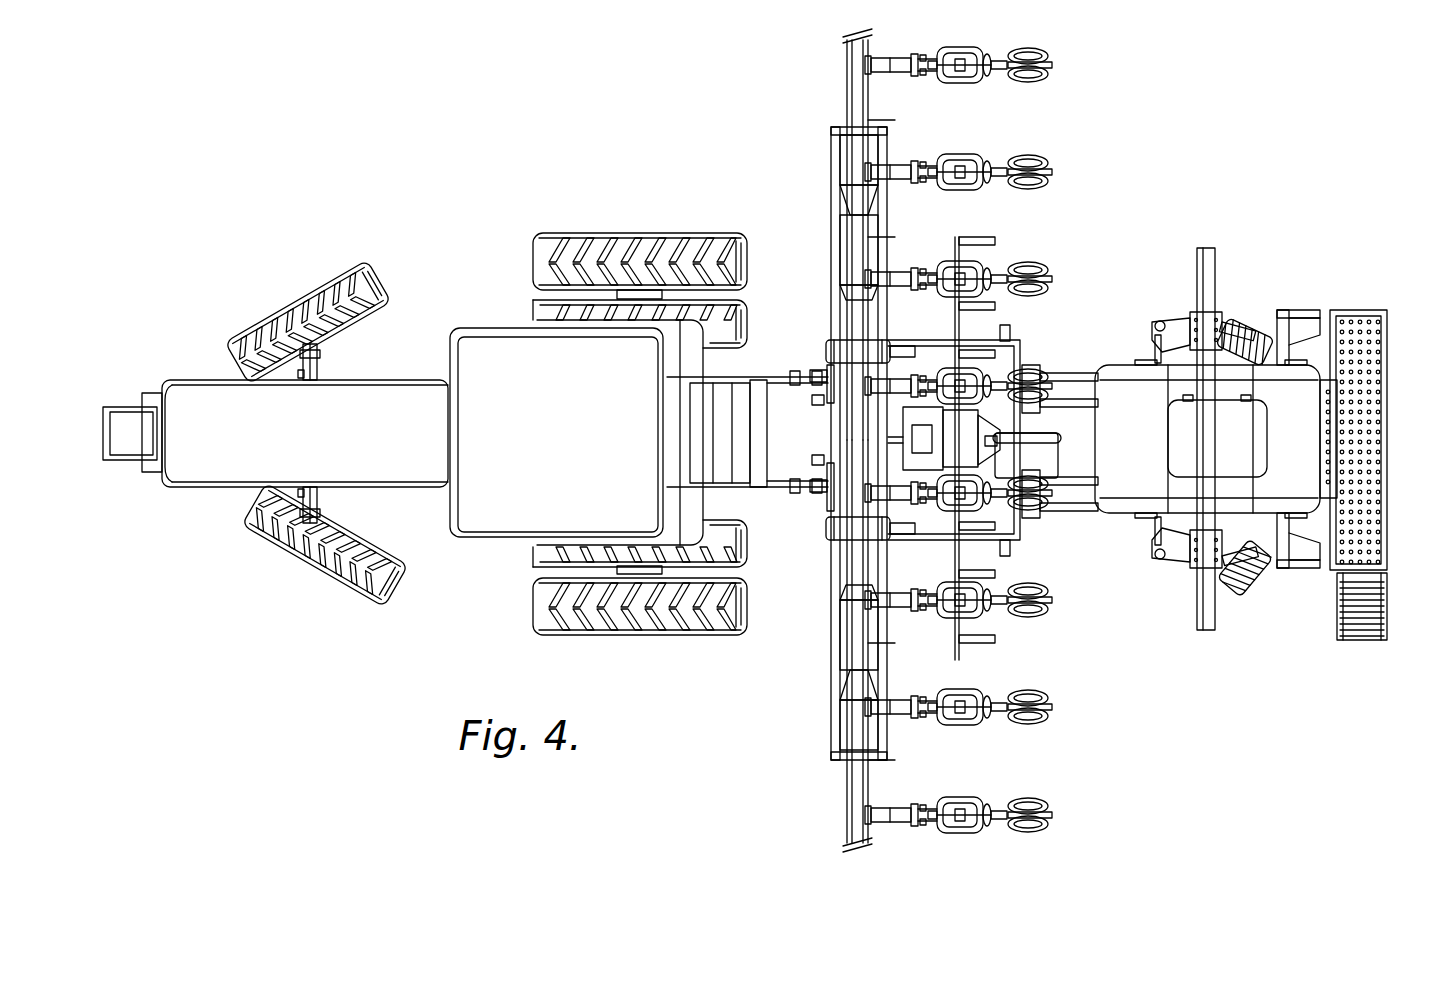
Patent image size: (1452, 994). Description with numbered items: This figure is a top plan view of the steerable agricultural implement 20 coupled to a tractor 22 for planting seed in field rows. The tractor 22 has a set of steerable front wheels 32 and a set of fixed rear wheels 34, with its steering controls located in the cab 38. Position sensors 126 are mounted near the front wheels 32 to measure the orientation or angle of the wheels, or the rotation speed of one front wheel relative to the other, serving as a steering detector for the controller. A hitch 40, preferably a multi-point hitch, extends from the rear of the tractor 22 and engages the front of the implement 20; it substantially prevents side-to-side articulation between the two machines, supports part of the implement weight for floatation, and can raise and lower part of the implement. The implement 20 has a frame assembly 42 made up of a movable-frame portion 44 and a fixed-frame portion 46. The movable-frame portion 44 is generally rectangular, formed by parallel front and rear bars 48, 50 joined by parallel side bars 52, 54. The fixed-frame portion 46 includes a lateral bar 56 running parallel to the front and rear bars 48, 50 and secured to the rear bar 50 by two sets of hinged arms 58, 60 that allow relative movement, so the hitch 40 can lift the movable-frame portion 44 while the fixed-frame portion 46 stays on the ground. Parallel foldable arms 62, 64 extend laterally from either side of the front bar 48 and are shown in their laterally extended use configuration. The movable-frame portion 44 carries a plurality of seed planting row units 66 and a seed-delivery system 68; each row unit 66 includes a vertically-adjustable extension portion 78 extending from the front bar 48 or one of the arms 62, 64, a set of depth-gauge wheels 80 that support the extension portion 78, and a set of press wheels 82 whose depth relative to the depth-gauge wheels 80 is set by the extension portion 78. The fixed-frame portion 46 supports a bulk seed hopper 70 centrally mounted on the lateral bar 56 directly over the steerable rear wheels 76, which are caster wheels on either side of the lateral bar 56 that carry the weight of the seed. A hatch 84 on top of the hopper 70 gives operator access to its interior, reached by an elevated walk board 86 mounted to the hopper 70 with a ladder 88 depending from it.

The steerable agricultural implement 20 is at (1295, 190).
The tractor 22 is at (410, 228).
The steerable front wheels 32 is at (270, 335).
The fixed rear wheels 34 is at (530, 307).
The cab 38 is at (460, 520).
The hitch 40 is at (768, 380).
The frame assembly 42 is at (1090, 360).
The movable-frame portion 44 is at (1005, 335).
The fixed-frame portion 46 is at (1185, 262).
The front bar 48 is at (850, 480).
The rear bar 50 is at (1015, 530).
The side bar 52 is at (935, 530).
The side bar 54 is at (900, 347).
The lateral bar 56 is at (1205, 262).
The hinged arms 58 is at (1100, 485).
The hinged arms 60 is at (1098, 412).
The foldable arm 62 is at (855, 795).
The foldable arm 64 is at (855, 92).
The seed planting row units 66 is at (1022, 150).
The seed-delivery system 68 is at (1040, 510).
The bulk seed hopper 70 is at (1300, 385).
The steerable rear wheels 76 is at (1250, 330).
The vertically-adjustable extension portion 78 is at (990, 825).
The depth-gauge wheels 80 is at (975, 50).
The press wheels 82 is at (1040, 50).
The hatch 84 is at (1240, 450).
The elevated walk board 86 is at (1370, 346).
The ladder 88 is at (1362, 620).
The position sensors 126 is at (300, 375).